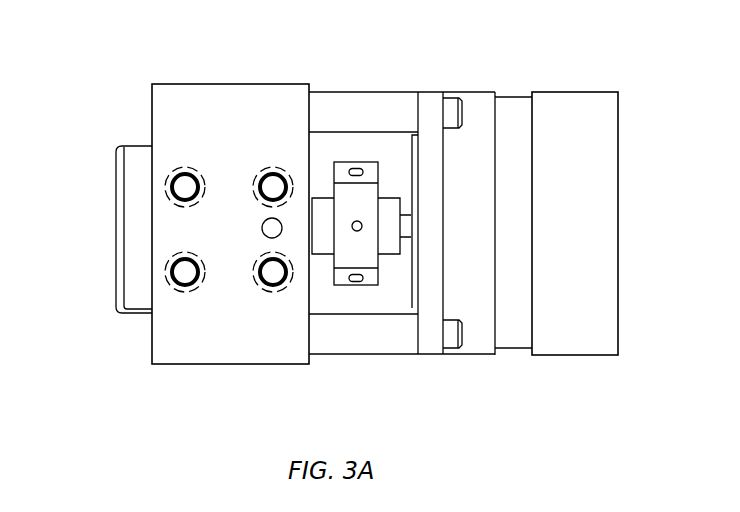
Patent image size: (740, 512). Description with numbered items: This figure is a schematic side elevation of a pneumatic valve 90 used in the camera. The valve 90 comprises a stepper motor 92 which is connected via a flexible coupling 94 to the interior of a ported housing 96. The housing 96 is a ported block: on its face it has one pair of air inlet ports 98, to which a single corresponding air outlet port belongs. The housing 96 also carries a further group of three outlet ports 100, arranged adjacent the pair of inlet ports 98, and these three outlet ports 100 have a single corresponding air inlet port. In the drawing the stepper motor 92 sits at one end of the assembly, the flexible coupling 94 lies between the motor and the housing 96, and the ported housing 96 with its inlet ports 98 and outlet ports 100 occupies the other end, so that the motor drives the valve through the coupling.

The valve 90 is at (273, 83).
The stepper motor 92 is at (596, 213).
The flexible coupling 94 is at (372, 280).
The ported housing 96 is at (190, 97).
The air inlet ports 98 is at (183, 271).
The outlet ports 100 is at (264, 188).